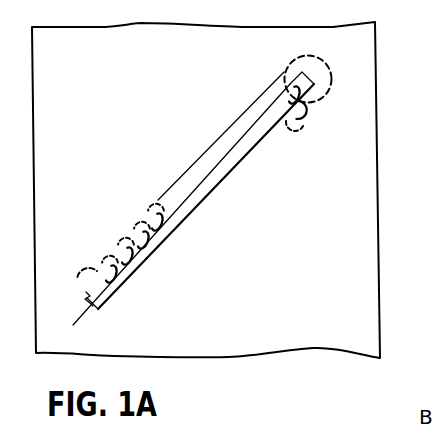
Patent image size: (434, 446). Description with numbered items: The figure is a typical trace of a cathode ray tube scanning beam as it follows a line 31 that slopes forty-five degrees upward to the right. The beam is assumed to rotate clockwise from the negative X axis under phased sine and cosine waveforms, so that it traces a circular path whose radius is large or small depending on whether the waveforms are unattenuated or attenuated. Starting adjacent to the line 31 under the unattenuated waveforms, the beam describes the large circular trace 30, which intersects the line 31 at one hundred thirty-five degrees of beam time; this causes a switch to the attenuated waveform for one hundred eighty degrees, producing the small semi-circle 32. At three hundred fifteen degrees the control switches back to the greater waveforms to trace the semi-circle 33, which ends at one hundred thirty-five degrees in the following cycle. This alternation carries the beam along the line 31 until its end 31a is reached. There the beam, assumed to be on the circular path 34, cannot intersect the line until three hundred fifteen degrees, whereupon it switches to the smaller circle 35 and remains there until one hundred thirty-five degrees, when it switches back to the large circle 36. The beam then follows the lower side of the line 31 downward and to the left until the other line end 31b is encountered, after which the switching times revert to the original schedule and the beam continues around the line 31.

The large circular trace 30 is at (86, 284).
The line 31 is at (213, 160).
The line end 31a is at (313, 75).
The line end 31b is at (76, 322).
The small semi-circle 32 is at (113, 273).
The semi-circle 33 is at (108, 252).
The circular path 34 is at (334, 70).
The smaller circle 35 is at (282, 87).
The large circle 36 is at (279, 121).